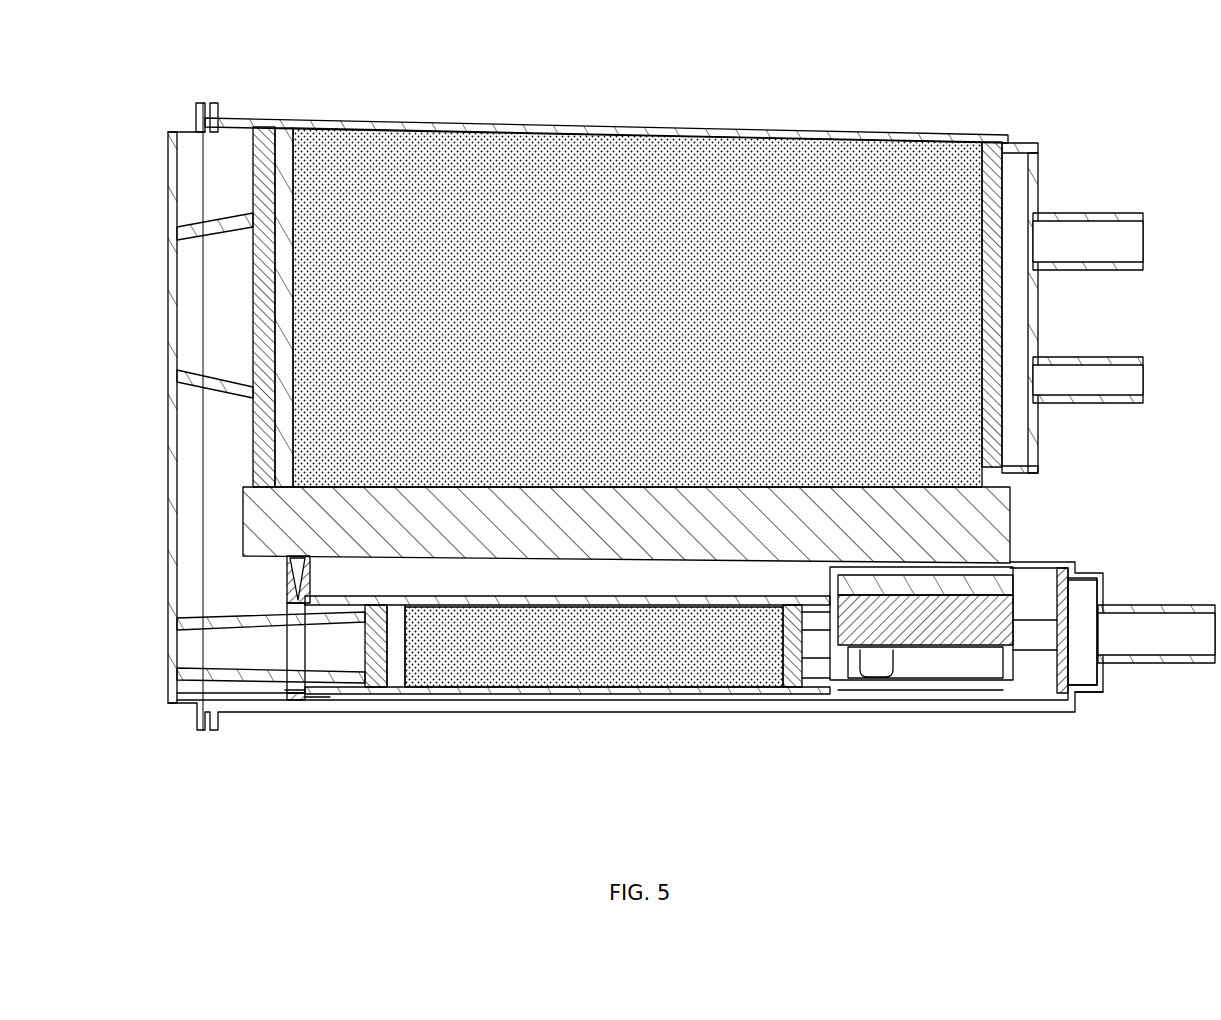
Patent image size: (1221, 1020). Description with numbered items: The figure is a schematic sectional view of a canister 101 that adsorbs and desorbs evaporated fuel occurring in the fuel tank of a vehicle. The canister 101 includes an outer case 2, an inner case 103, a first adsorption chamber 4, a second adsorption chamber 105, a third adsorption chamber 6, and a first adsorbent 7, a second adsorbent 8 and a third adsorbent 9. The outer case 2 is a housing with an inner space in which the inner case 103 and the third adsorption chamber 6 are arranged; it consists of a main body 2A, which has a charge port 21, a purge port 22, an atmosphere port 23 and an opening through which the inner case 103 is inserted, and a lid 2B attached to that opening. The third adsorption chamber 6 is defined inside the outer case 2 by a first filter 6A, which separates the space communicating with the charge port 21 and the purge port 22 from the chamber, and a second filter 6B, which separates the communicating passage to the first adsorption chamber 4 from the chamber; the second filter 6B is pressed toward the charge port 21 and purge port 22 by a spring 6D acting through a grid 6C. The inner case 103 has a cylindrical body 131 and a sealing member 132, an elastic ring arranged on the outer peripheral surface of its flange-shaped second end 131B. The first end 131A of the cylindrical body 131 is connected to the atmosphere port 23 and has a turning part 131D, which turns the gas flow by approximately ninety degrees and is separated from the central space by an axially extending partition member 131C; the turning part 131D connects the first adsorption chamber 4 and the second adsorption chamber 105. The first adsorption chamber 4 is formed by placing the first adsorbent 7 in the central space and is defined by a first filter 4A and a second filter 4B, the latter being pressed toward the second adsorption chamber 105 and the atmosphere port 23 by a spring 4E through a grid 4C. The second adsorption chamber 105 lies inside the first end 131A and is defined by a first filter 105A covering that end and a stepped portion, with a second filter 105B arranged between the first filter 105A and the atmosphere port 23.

The outer case 2 is at (599, 391).
The main body 2A is at (790, 133).
The lid 2B is at (172, 210).
The first adsorption chamber 4 is at (461, 700).
The first filter 4A is at (790, 705).
The second filter 4B is at (395, 695).
The grid 4C is at (372, 654).
The spring 4E is at (178, 690).
The third adsorption chamber 6 is at (550, 308).
The first filter 6A is at (1000, 146).
The second filter 6B is at (290, 135).
The grid 6C is at (250, 340).
The spring 6D is at (178, 397).
The first adsorbent 7 is at (606, 660).
The second adsorbent 8 is at (934, 640).
The third adsorbent 9 is at (506, 158).
The charge port 21 is at (1110, 235).
The purge port 22 is at (1110, 376).
The atmosphere port 23 is at (1175, 628).
The canister 101 is at (1142, 120).
The inner case 103 is at (270, 700).
The second adsorption chamber 105 is at (1020, 600).
The first filter 105A is at (998, 580).
The second filter 105B is at (1082, 690).
The cylindrical body 131 is at (296, 598).
The first end 131A is at (885, 695).
The second end 131B is at (318, 703).
The partition member 131C is at (818, 685).
The turning part 131D is at (970, 657).
The sealing member 132 is at (298, 702).